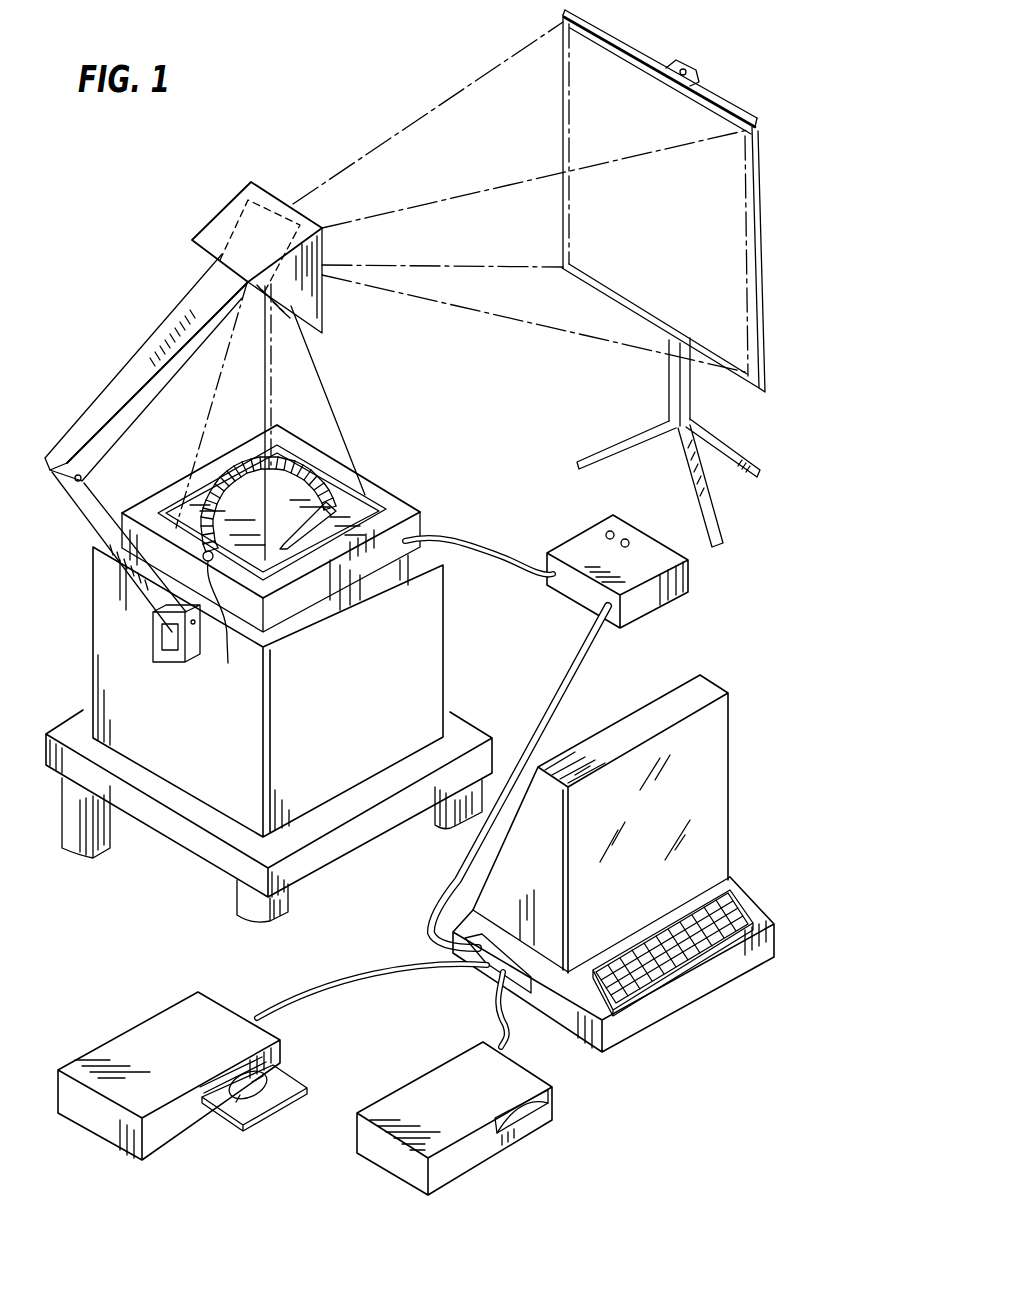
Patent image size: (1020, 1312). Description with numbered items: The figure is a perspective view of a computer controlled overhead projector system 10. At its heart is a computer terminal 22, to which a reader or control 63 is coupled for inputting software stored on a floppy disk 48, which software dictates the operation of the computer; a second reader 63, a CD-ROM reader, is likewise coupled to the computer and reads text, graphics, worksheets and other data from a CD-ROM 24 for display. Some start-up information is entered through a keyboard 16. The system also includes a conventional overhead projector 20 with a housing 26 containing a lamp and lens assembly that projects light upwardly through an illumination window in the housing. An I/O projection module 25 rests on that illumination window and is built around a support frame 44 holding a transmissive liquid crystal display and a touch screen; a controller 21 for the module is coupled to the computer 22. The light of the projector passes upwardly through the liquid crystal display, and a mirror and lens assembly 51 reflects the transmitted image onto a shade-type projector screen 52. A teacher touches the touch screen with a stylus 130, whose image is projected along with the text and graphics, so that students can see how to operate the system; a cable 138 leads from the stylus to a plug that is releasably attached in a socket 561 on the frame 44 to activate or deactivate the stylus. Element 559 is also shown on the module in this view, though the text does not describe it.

The computer controlled overhead projector system 10 is at (334, 135).
The mirror and lens assembly 51 is at (222, 208).
The shade-type projector screen 52 is at (754, 112).
The I/O projection module 25 is at (434, 498).
The support frame 44 is at (372, 495).
The cable 138 is at (245, 468).
The stylus 130 is at (333, 520).
The tablet frame 559 is at (205, 500).
The socket 561 is at (200, 645).
The overhead projector 20 is at (450, 668).
The housing 26 is at (90, 676).
The controller 21 is at (689, 582).
The computer terminal 22 is at (708, 690).
The keyboard 16 is at (734, 905).
The reader 63 is at (142, 1020).
The floppy disk 48 is at (292, 1078).
The CD-ROM 24 is at (548, 1118).